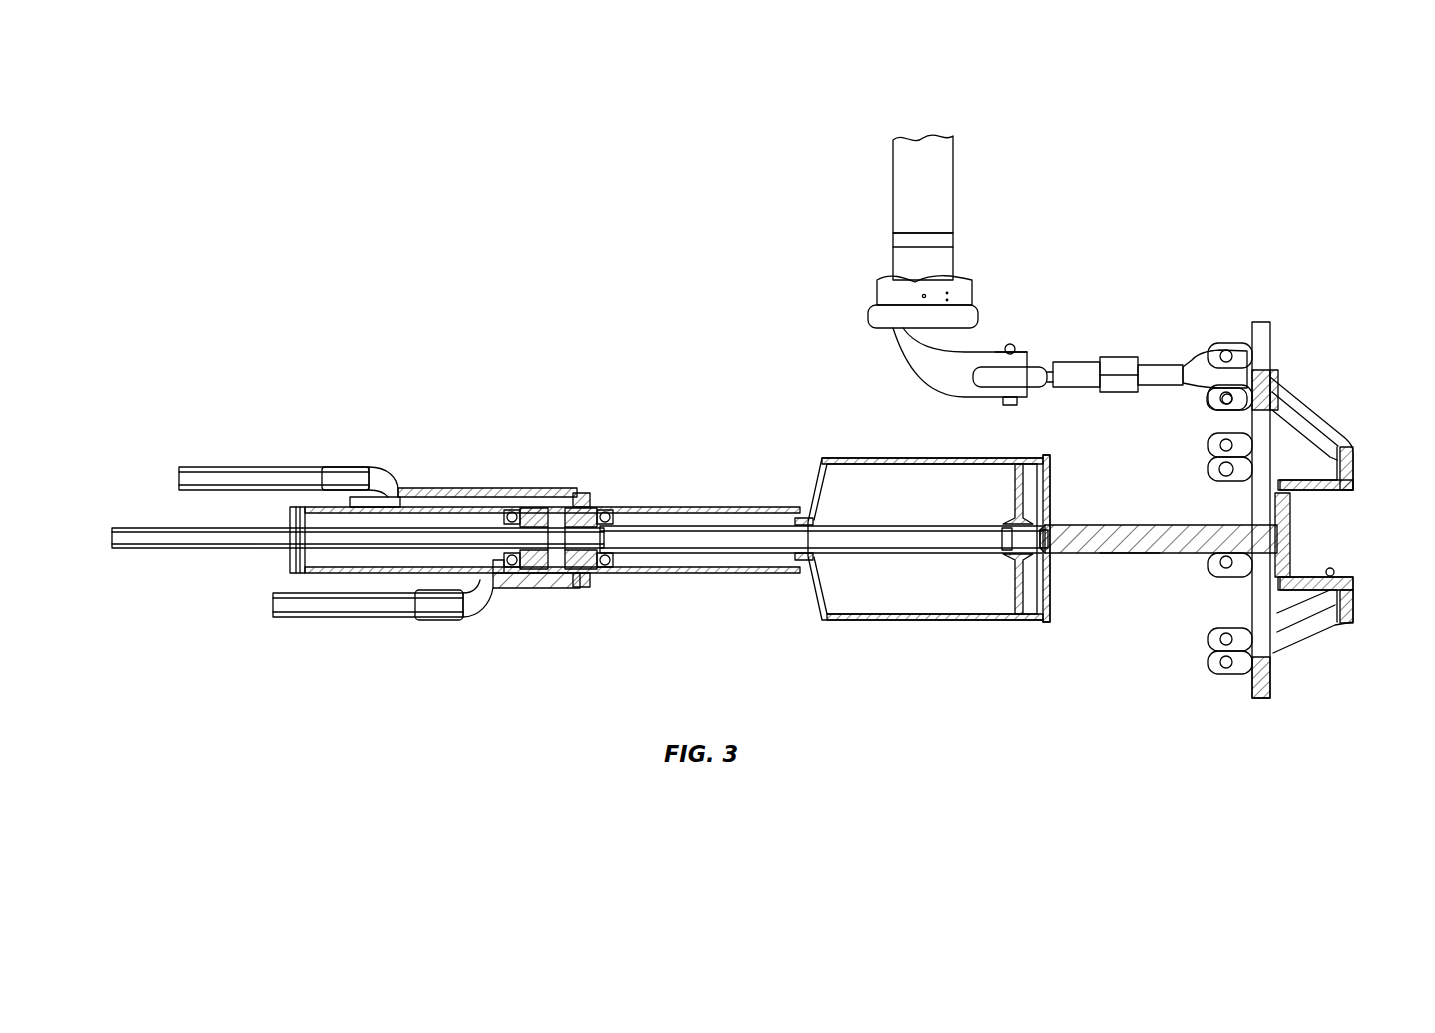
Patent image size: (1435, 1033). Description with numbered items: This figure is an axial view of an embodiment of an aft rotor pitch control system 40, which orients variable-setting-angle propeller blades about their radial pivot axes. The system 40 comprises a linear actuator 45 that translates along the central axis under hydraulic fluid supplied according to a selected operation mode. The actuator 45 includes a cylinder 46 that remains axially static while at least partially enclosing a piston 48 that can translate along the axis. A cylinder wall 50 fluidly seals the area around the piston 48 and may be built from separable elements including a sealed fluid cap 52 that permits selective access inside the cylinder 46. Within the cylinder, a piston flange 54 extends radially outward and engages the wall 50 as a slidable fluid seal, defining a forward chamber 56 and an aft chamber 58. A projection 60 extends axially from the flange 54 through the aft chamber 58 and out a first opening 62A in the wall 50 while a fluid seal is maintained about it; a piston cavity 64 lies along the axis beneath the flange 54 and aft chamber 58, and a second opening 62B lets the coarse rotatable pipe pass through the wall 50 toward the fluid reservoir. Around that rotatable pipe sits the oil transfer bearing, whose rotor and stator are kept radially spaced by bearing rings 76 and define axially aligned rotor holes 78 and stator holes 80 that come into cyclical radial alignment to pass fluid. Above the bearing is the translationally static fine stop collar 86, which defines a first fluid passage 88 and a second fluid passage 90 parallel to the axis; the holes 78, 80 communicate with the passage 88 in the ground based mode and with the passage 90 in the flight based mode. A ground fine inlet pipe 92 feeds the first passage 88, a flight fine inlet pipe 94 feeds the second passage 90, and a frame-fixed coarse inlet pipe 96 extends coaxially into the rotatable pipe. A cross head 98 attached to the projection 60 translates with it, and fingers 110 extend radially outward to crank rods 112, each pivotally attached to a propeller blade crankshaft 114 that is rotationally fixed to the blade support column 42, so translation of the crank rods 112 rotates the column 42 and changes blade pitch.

The pitch control system 40 is at (538, 420).
The blade support column 42 is at (953, 206).
The linear actuator 45 is at (1141, 590).
The cylinder 46 is at (927, 556).
The piston 48 is at (1128, 556).
The cylinder wall 50 is at (862, 458).
The sealed fluid cap 52 is at (1051, 498).
The piston flange 54 is at (1013, 486).
The forward chamber 56 is at (872, 587).
The aft chamber 58 is at (1030, 590).
The projection 60 is at (1150, 523).
The first opening 62A is at (1058, 555).
The second opening 62B is at (805, 568).
The piston cavity 64 is at (1030, 540).
The bearing rings 76 is at (618, 562).
The rotor holes 78 is at (557, 523).
The stator holes 80 is at (558, 563).
The fine stop collar 86 is at (542, 489).
The first fluid passage 88 is at (417, 501).
The second fluid passage 90 is at (515, 578).
The ground fine inlet pipe 92 is at (233, 467).
The flight fine inlet pipe 94 is at (308, 617).
The coarse inlet pipe 96 is at (220, 550).
The cross head 98 is at (1355, 615).
The fingers 110 is at (1307, 398).
The crank rods 112 is at (1078, 360).
The propeller blade crankshaft 114 is at (980, 348).